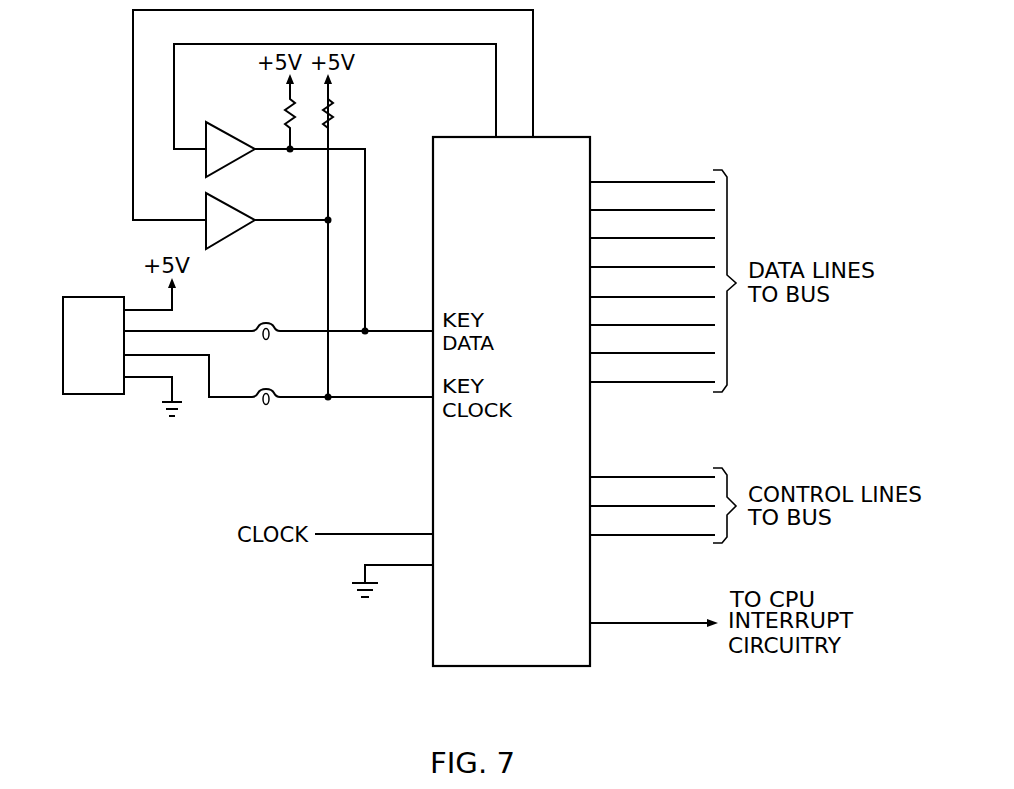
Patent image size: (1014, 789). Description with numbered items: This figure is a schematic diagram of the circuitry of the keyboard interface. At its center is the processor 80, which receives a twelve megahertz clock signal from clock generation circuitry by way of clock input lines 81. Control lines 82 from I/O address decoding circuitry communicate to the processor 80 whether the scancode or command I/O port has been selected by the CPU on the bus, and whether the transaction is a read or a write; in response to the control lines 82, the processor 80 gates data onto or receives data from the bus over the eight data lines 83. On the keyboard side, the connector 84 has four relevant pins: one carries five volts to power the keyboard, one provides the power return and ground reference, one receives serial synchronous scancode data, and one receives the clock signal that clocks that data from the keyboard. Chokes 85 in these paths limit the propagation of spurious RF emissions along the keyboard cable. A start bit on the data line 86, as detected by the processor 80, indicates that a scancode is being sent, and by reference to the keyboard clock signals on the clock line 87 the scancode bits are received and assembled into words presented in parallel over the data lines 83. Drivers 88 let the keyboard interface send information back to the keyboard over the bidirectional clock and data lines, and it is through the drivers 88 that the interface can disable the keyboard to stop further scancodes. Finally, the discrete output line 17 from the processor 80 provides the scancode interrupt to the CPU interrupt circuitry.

The discrete output line 17 is at (650, 625).
The 8042 processor 80 is at (505, 668).
The clock input lines 81 is at (372, 534).
The control lines 82 is at (660, 477).
The data lines 83 is at (663, 281).
The connector 84 is at (97, 395).
The chokes 85 is at (262, 322).
The data line 86 is at (402, 328).
The clock line 87 is at (388, 402).
The drivers 88 is at (248, 157).